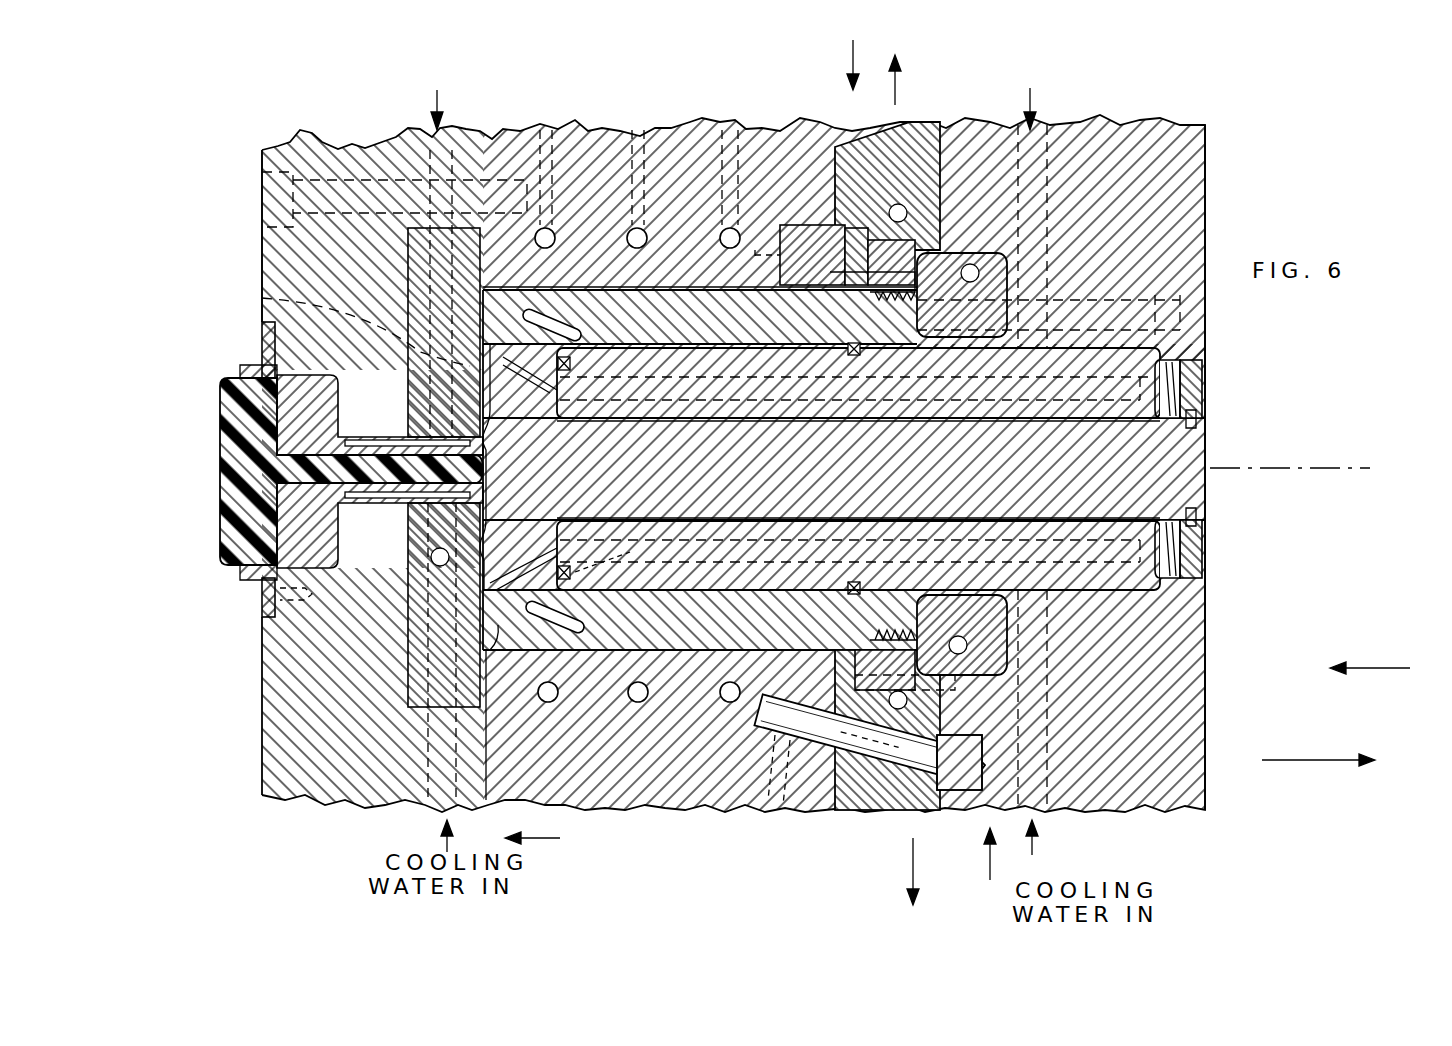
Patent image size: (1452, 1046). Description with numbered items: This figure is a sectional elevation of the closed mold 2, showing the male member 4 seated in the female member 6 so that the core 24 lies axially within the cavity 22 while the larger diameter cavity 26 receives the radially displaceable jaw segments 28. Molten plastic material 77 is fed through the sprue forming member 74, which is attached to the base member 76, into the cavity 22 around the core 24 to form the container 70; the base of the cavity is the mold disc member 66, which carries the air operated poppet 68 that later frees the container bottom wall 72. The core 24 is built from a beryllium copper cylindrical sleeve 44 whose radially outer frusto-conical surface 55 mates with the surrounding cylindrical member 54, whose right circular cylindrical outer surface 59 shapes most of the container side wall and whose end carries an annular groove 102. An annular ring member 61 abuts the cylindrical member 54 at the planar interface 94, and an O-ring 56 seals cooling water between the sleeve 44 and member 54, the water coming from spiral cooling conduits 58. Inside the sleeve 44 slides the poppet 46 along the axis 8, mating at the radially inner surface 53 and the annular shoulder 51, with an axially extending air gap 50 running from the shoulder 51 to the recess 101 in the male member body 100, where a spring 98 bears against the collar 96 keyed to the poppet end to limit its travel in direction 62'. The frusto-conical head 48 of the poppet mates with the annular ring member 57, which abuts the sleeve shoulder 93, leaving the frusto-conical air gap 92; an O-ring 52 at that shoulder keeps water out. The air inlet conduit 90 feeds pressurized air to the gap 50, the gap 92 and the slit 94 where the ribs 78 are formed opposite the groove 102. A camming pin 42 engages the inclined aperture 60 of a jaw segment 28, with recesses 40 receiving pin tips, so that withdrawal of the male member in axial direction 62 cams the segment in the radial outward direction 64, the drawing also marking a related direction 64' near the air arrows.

The mold 2 is at (1255, 124).
The male member 4 is at (1205, 206).
The female member 6 is at (622, 116).
The axis 8 is at (1306, 470).
The cavity 22 is at (568, 648).
The core 24 is at (1205, 432).
The larger diameter cavity 26 is at (985, 78).
The jaw segments 28 is at (905, 155).
The recesses 40 is at (945, 810).
The camming pins 42 is at (862, 790).
The cylindrical sleeve 44 is at (792, 565).
The poppet 46 is at (1172, 462).
The frusto-conical head 48 is at (543, 479).
The air gap 50 is at (900, 492).
The annular shoulder 51 is at (650, 518).
The O-ring 52 is at (578, 565).
The radially inner surface 53 is at (978, 522).
The cylindrical member 54 is at (495, 660).
The frusto-conical surface 55 is at (725, 592).
The O-ring 56 is at (858, 586).
The annular ring member 57 is at (505, 636).
The spiral cooling conduits 58 is at (640, 128).
The right circular cylindrical outer surface 59 is at (660, 288).
The inclined aperture 60 is at (832, 742).
The annular ring member 61 is at (1003, 648).
The axial direction 62 is at (1318, 774).
The direction 62' is at (1372, 683).
The radial outward direction 64 is at (887, 480).
The air inlet 64' is at (885, 489).
The mold disc member 66 is at (415, 612).
The air operated poppet 68 is at (262, 298).
The container 70 is at (585, 288).
The bottom wall 72 is at (488, 428).
The sprue forming member 74 is at (248, 398).
The base member 76 is at (300, 722).
The molten plastic material 77 is at (230, 485).
The ribs 78 is at (870, 632).
The air inlet conduit 90 is at (1033, 180).
The air gap 92 is at (600, 340).
The shoulder 93 is at (550, 530).
The planar interface 94 is at (862, 302).
The collar 96 is at (1193, 392).
The spring 98 is at (1190, 562).
The male member body 100 is at (1180, 636).
The recess 101 is at (1195, 375).
The annular groove 102 is at (895, 632).